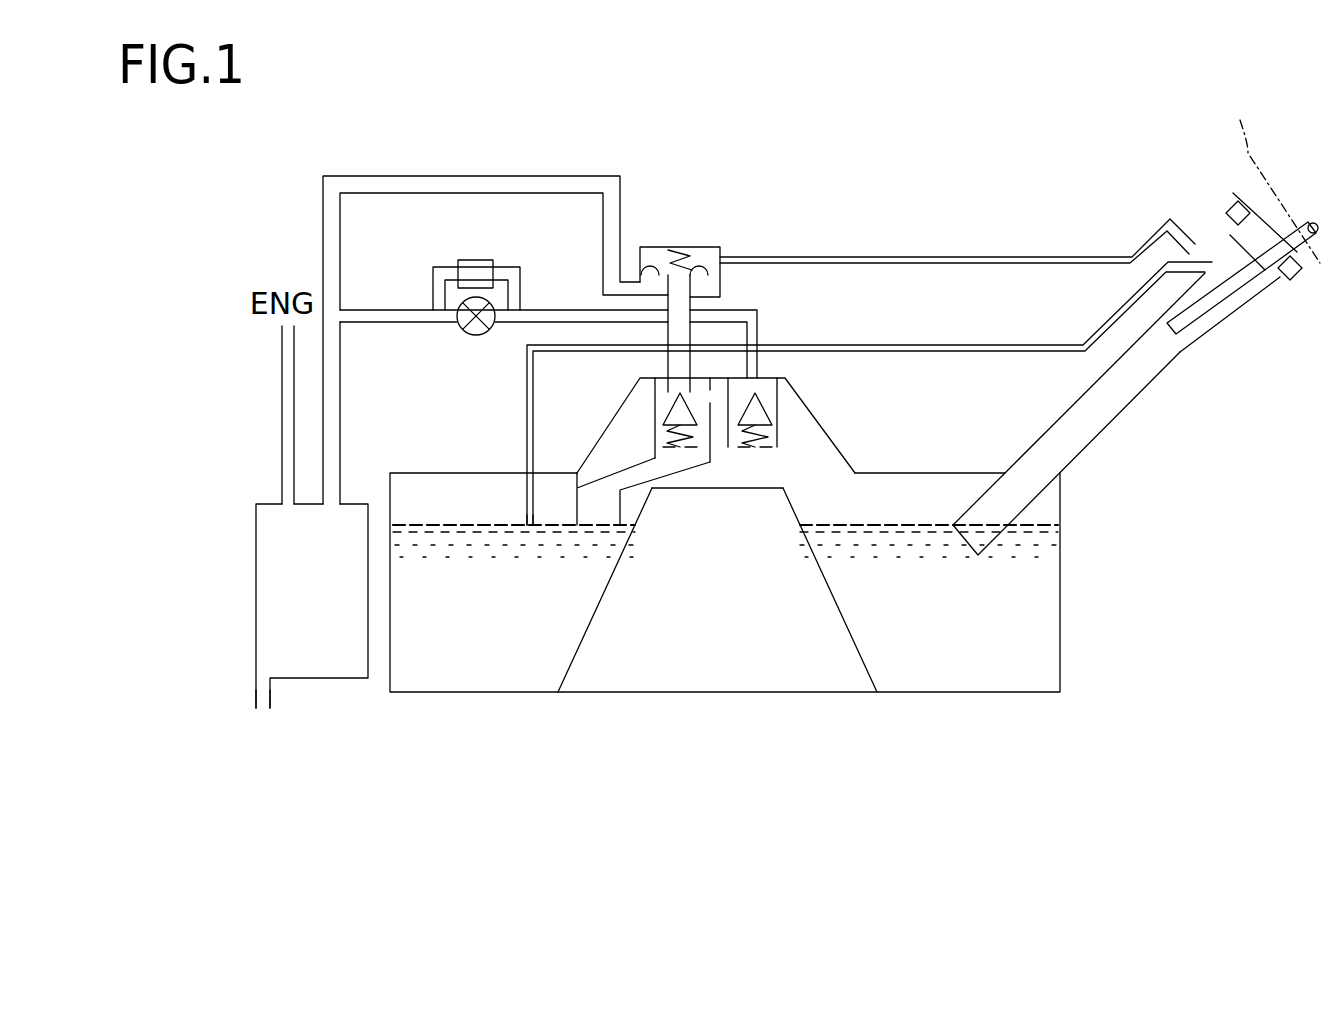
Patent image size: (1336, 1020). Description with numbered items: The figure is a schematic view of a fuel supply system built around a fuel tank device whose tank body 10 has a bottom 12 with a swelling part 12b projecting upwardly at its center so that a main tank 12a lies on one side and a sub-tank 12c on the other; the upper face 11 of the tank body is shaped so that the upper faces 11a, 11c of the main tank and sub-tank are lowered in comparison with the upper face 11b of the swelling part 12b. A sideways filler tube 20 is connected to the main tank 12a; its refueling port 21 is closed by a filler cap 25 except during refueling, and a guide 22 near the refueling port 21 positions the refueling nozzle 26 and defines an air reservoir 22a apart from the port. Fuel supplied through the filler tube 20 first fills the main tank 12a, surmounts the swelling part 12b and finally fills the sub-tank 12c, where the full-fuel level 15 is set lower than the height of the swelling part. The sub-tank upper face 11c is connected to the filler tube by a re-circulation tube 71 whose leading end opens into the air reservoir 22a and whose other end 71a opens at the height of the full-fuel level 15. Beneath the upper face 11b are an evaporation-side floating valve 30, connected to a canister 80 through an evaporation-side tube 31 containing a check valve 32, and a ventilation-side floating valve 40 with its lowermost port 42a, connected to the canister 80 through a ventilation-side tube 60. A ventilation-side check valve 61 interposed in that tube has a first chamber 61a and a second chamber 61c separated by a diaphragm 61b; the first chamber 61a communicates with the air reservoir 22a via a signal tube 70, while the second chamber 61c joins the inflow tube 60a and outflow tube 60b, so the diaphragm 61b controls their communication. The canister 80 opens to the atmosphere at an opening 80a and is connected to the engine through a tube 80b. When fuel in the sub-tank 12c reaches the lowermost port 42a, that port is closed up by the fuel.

The tank body 10 is at (1062, 598).
The upper face 11 is at (701, 626).
The upper face of main tank 11a is at (901, 473).
The upper face of swelling part 11b is at (741, 384).
The upper face of sub-tank 11c is at (507, 505).
The bottom 12 is at (727, 638).
The main tank 12a is at (849, 612).
The swelling part 12b is at (735, 489).
The sub-tank 12c is at (540, 692).
The full-fuel level 15 is at (405, 518).
The filler tube 20 is at (1087, 450).
The refueling port 21 is at (1270, 280).
The guide 22 is at (1200, 265).
The air reservoir 22a is at (1200, 250).
The filler cap 25 is at (1269, 175).
The refueling nozzle 26 is at (1308, 220).
The evaporation-side floating valve 30 is at (780, 410).
The evaporation-side tube 31 is at (532, 309).
The check valve 32 is at (473, 335).
The ventilation-side floating valve 40 is at (653, 441).
The lowermost port 42a is at (597, 524).
The ventilation-side tube 60 is at (506, 258).
The inflow tube 60a is at (668, 333).
The outflow tube 60b is at (497, 176).
The ventilation-side check valve 61 is at (766, 200).
The first chamber 61a is at (700, 263).
The diaphragm 61b is at (715, 263).
The second chamber 61c is at (788, 221).
The signal tube 70 is at (967, 257).
The re-circulation tube 71 is at (908, 345).
The end of re-circulation tube 71a is at (532, 528).
The canister 80 is at (336, 680).
The opening 80a is at (272, 694).
The tube 80b is at (282, 450).